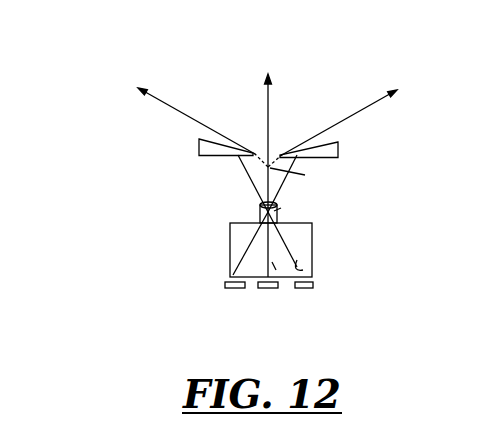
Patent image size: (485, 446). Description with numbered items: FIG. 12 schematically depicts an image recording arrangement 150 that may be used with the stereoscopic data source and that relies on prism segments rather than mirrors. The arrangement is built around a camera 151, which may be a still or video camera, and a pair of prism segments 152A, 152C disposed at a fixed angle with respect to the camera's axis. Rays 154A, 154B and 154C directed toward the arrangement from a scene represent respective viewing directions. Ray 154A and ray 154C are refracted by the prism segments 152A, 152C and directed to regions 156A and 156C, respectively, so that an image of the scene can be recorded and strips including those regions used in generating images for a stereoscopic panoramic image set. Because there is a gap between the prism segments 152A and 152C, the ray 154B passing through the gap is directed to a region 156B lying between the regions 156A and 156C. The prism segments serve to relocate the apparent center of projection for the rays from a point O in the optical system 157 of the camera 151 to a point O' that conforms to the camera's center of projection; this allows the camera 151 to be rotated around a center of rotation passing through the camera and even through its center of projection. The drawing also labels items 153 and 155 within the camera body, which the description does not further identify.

The image recording arrangement 150 is at (136, 354).
The camera 151 is at (230, 247).
The prism segment 152A is at (341, 149).
The prism segment 152C is at (199, 149).
The light emitting element 153 is at (272, 265).
The ray 154A is at (368, 110).
The ray 154B is at (272, 117).
The ray 154C is at (168, 105).
The reflecting portion 155 is at (303, 269).
The region 156A is at (224, 283).
The region 156B is at (266, 291).
The region 156C is at (316, 287).
The optical system 157 is at (259, 213).